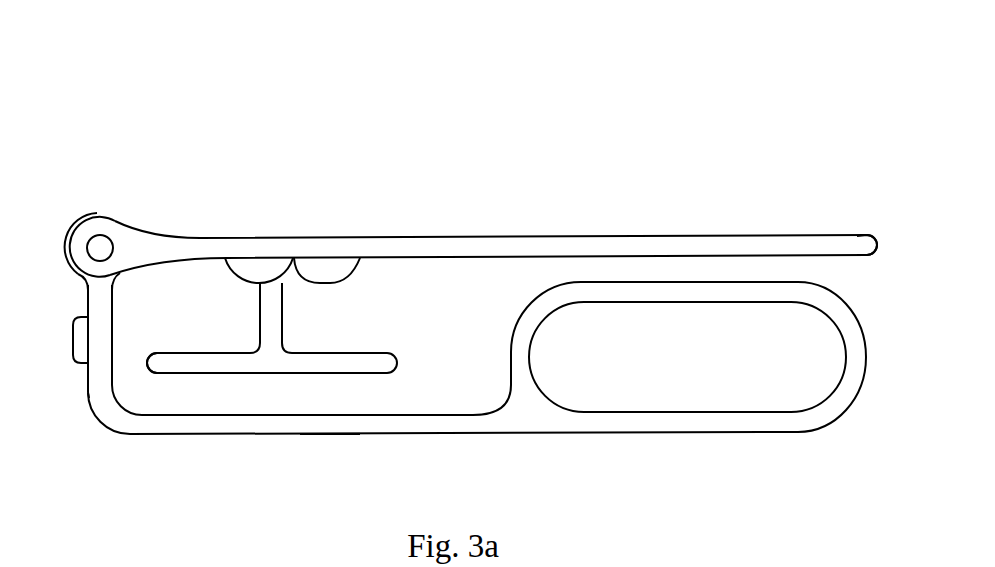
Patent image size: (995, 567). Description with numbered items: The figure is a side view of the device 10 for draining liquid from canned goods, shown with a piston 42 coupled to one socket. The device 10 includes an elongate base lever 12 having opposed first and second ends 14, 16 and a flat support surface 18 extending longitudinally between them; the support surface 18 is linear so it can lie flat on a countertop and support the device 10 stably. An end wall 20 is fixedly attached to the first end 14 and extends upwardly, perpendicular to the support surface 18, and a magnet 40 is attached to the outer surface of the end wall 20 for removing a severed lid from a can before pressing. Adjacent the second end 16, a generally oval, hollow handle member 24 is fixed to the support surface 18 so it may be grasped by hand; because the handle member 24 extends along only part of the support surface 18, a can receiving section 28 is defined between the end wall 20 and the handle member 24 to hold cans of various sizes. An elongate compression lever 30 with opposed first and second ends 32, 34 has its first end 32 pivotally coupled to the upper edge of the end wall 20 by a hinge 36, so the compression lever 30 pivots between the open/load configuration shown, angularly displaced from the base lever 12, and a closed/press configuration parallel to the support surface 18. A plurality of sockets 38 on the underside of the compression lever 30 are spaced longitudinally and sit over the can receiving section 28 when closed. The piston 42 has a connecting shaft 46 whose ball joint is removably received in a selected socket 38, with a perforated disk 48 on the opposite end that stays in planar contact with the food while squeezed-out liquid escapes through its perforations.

The device 10 is at (319, 93).
The base lever 12 is at (416, 456).
The first end 14 is at (120, 435).
The second end 16 is at (830, 417).
The support surface 18 is at (335, 435).
The end wall 20 is at (87, 395).
The handle member 24 is at (668, 302).
The can receiving section 28 is at (445, 380).
The compression lever 30 is at (430, 237).
The first end 32 is at (100, 218).
The second end 34 is at (867, 235).
The hinge 36 is at (78, 222).
The sockets 38 is at (228, 272).
The magnet 40 is at (72, 348).
The piston 42 is at (211, 334).
The connecting shaft 46 is at (283, 312).
The perforated disk 48 is at (378, 348).